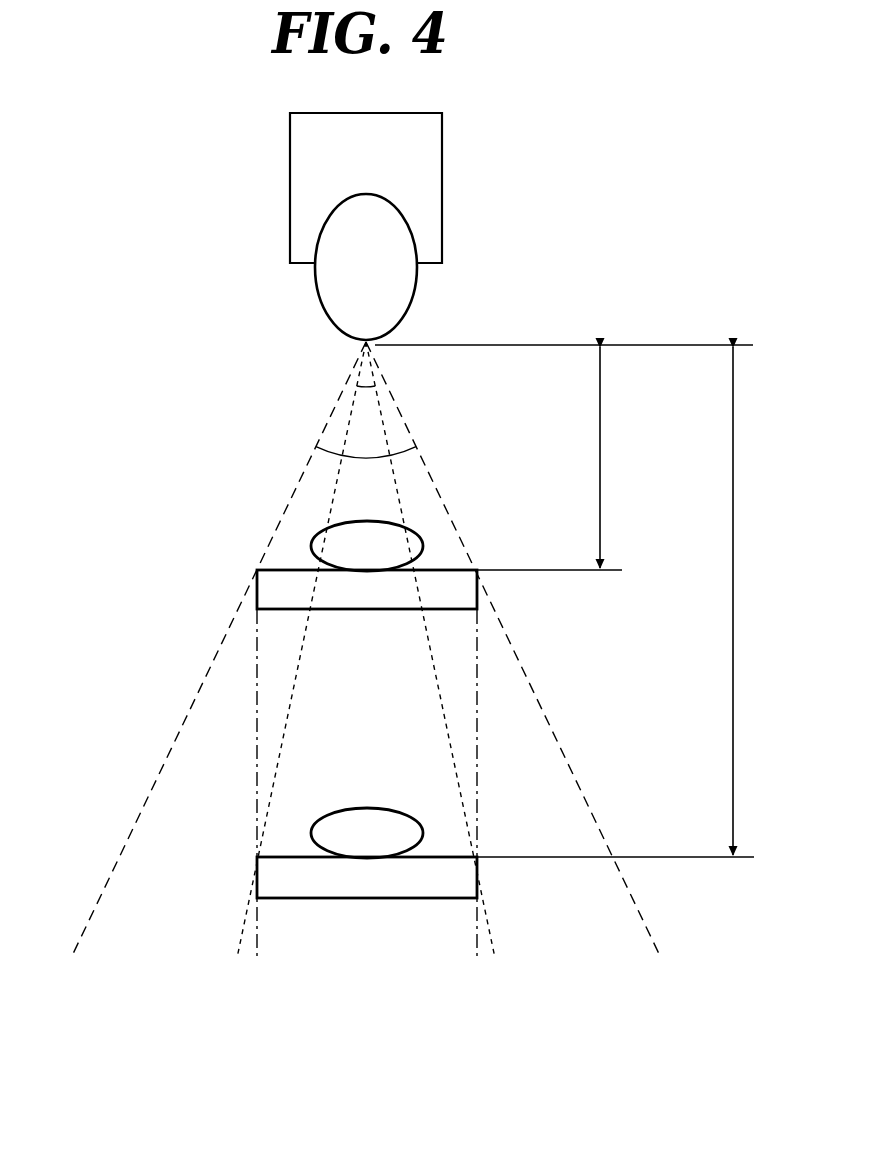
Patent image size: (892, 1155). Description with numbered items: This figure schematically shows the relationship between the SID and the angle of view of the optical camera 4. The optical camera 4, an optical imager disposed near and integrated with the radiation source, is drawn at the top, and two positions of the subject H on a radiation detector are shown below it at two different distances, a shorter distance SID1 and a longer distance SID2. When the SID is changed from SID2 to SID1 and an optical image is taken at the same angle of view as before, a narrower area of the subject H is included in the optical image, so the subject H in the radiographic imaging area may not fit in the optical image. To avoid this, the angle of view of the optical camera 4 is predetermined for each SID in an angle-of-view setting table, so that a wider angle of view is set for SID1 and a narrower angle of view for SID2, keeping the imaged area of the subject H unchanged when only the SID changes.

The optical camera 4 is at (442, 174).
The subject H is at (422, 542).
The SID SID1 is at (636, 457).
The SID SID2 is at (768, 601).